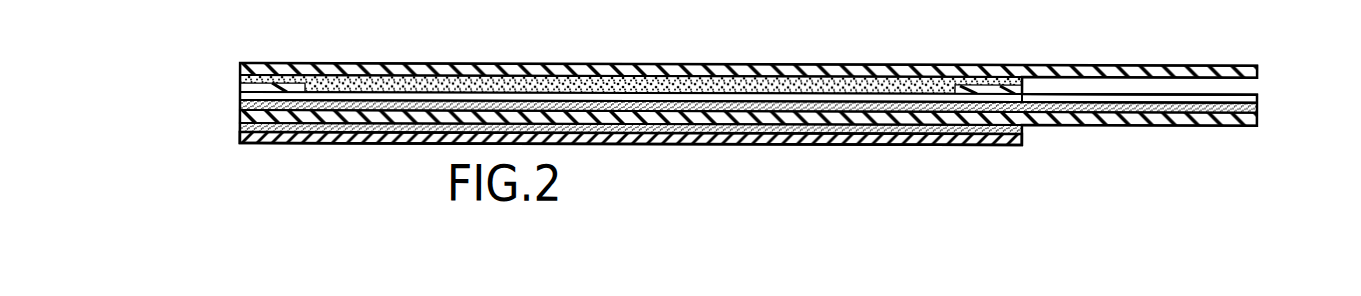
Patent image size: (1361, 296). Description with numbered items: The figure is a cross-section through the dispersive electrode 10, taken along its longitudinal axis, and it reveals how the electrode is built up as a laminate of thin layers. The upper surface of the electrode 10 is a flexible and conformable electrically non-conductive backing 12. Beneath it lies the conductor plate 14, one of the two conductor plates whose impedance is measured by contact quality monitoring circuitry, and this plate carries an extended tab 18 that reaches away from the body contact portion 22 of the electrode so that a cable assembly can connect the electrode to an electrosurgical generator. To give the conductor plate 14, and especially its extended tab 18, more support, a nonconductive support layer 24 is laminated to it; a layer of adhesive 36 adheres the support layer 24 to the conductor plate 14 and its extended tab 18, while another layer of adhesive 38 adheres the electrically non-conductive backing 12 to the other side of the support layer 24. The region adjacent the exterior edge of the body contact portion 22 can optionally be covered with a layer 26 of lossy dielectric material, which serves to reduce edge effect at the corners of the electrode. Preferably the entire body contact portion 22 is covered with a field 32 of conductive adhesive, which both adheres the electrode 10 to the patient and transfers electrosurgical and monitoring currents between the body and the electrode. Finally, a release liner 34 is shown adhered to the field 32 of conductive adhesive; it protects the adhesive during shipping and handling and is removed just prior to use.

The dispersive electrode 10 is at (1085, 147).
The electrically non-conductive backing 12 is at (668, 145).
The conductor plate 14 is at (240, 97).
The extended tab 18 is at (1240, 96).
The body contact portion 22 is at (990, 149).
The nonconductive support layer 24 is at (1208, 125).
The layer of lossy dielectric material 26 is at (240, 88).
The field of conductive adhesive 32 is at (363, 78).
The release liner 34 is at (423, 63).
The layer of adhesive 36 is at (1258, 110).
The layer of adhesive 38 is at (240, 123).